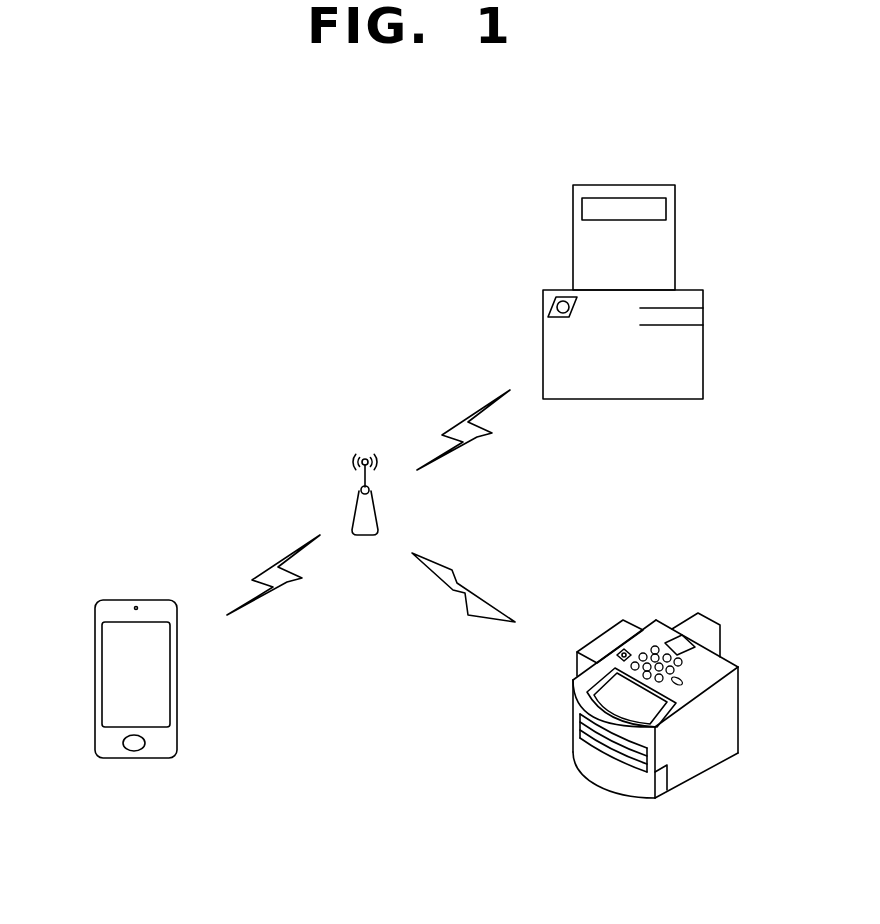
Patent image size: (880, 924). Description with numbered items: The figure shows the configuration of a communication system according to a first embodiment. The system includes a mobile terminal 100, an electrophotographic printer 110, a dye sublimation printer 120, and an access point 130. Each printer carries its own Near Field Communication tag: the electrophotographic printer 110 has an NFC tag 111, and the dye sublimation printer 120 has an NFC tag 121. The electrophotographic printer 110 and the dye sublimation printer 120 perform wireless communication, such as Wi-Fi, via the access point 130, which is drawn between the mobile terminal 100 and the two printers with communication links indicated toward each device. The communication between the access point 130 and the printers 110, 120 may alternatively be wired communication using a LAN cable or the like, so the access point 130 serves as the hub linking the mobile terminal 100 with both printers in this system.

The mobile terminal 100 is at (95, 665).
The electrophotographic printer 110 is at (667, 688).
The NFC tag 111 is at (619, 651).
The dye sublimation printer 120 is at (625, 292).
The NFC tag 121 is at (552, 305).
The access point 130 is at (345, 463).